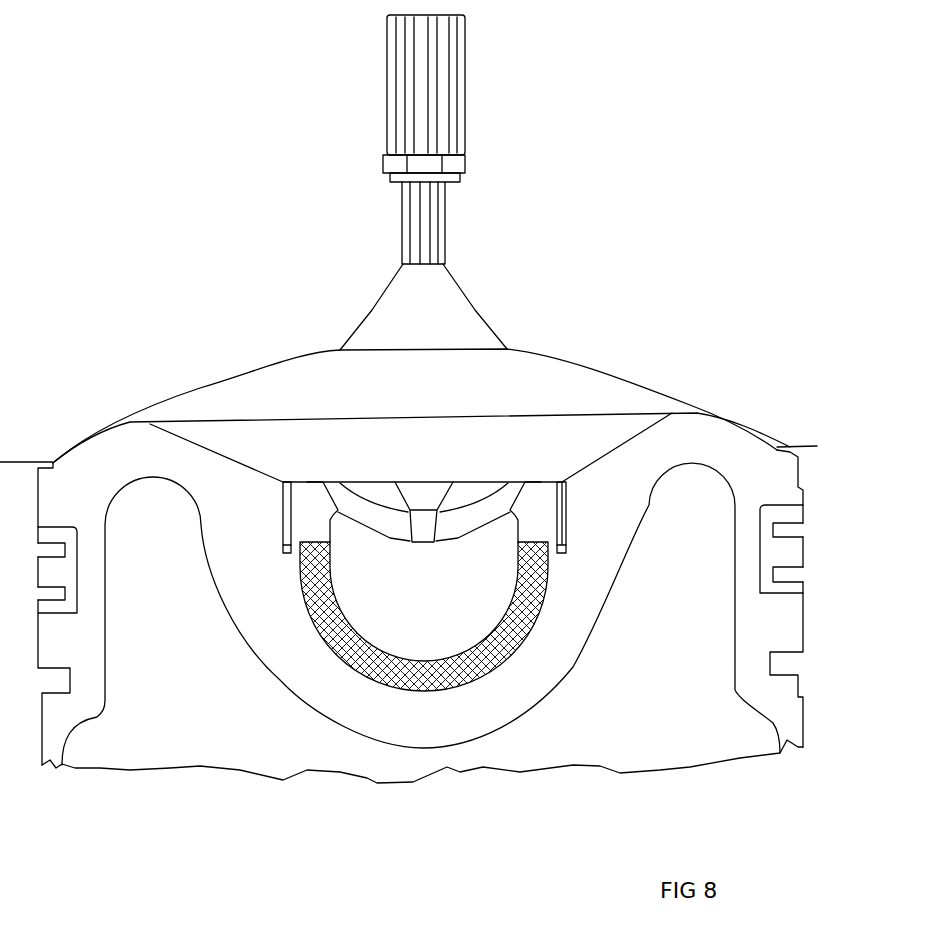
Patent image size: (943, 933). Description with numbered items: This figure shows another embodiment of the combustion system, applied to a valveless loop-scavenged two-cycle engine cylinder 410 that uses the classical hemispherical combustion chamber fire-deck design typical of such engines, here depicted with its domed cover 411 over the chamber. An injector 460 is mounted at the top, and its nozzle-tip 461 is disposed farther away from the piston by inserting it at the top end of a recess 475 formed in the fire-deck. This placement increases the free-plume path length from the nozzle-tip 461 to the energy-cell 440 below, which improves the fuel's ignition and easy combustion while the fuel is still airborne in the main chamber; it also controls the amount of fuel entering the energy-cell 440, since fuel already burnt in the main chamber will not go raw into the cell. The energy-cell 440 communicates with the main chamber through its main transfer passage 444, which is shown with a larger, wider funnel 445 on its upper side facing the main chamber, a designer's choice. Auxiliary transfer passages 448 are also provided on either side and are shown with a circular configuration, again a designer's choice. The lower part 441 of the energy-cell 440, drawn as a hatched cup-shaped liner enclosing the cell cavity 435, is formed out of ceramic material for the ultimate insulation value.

The two-cycle engine cylinder 410 is at (658, 307).
The dome cover 411 is at (652, 386).
The cup 435 is at (432, 686).
The energy-cell 440 is at (482, 477).
The lower part of the energy-cell 441 is at (508, 652).
The main transfer passage 444 is at (346, 483).
The funnel 445 is at (420, 482).
The auxiliary transfer passages 448 is at (320, 512).
The injector 460 is at (465, 118).
The nozzle-tip 461 is at (447, 231).
The recess 475 is at (478, 306).